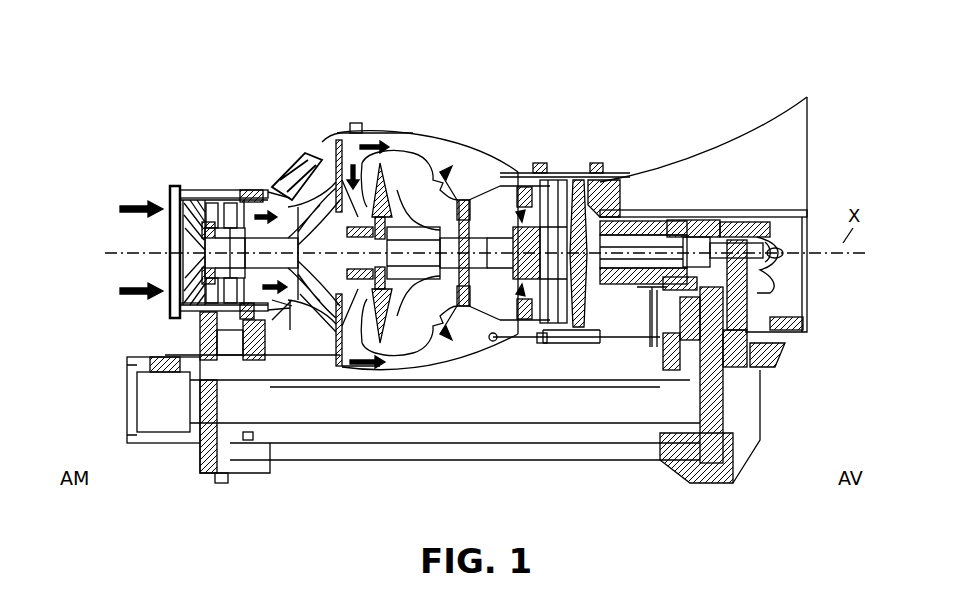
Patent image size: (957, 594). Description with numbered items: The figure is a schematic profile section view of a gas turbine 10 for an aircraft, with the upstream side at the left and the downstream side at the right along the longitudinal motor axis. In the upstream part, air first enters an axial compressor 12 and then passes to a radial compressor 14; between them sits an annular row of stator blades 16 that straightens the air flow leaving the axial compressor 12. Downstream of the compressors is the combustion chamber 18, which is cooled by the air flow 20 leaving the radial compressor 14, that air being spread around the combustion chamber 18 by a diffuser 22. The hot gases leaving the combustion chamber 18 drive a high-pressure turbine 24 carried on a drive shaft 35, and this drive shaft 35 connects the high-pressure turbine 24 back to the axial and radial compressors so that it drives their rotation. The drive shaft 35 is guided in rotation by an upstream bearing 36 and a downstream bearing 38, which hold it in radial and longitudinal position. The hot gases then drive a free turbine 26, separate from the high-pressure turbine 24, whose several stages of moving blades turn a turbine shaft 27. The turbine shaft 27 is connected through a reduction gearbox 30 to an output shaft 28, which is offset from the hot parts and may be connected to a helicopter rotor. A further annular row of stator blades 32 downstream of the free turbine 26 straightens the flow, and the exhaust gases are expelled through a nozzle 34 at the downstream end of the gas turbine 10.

The gas turbine 10 is at (196, 84).
The axial compressor 12 is at (182, 190).
The radial compressor 14 is at (318, 305).
The annular row of stator blades 16 is at (222, 228).
The combustion chamber 18 is at (395, 340).
The air flow 20 is at (462, 345).
The diffuser 22 is at (338, 175).
The high-pressure turbine 24 is at (466, 215).
The free turbine 26 is at (583, 220).
The turbine shaft 27 is at (660, 245).
The output shaft 28 is at (550, 410).
The reduction gearbox 30 is at (765, 362).
The annular row of stator blades 32 is at (556, 185).
The nozzle 34 is at (755, 150).
The drive shaft 35 is at (416, 238).
The upstream bearing 36 is at (328, 170).
The downstream bearing 38 is at (523, 185).